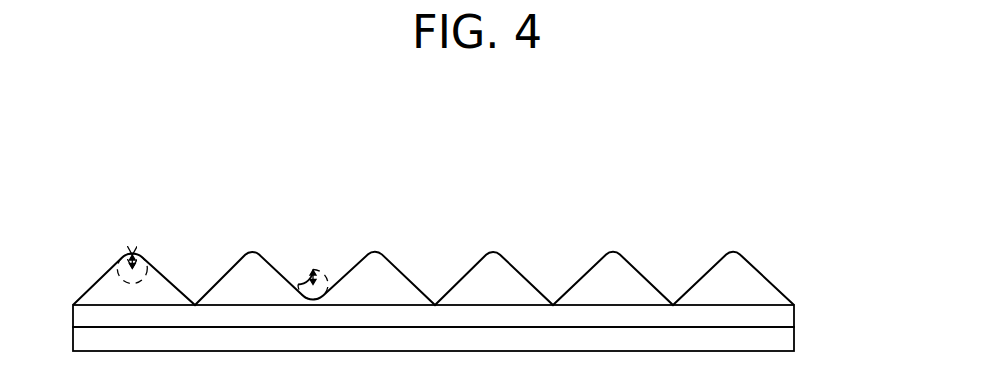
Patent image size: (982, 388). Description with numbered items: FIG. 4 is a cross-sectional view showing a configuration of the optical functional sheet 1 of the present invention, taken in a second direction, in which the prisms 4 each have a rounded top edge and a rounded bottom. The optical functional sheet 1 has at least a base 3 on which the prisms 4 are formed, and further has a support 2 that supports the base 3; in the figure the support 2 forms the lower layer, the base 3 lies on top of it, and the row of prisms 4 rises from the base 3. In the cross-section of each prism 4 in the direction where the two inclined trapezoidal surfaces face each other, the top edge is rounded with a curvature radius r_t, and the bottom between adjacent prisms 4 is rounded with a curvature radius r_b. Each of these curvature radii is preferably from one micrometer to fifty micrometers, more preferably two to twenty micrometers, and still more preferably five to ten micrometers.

The optical functional sheet 1 is at (469, 243).
The support 2 is at (795, 338).
The base 3 is at (796, 315).
The prisms 4 is at (503, 257).